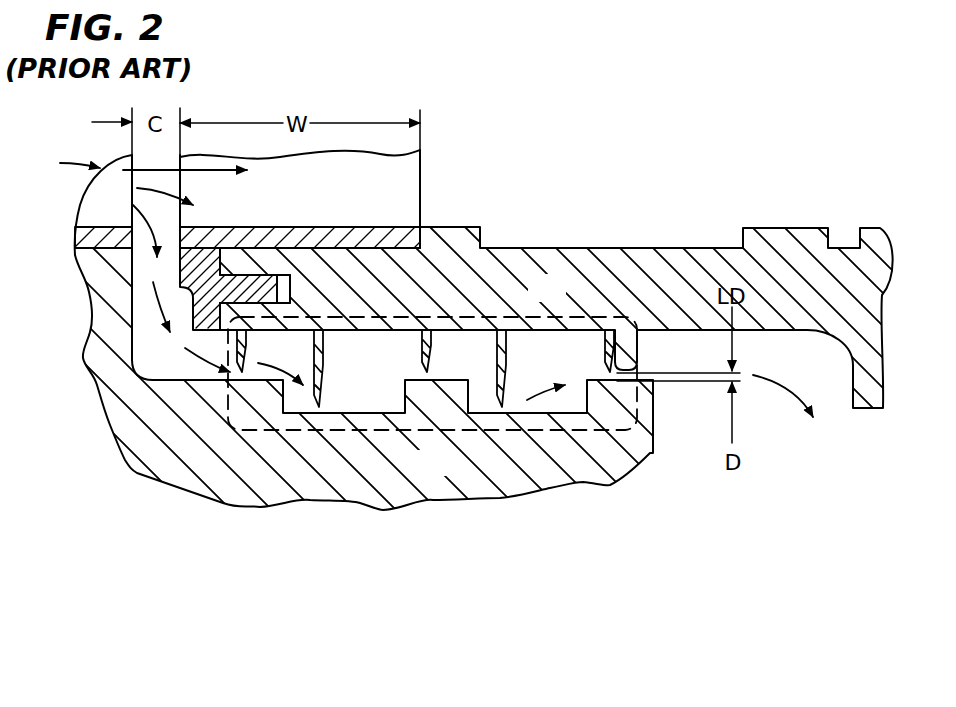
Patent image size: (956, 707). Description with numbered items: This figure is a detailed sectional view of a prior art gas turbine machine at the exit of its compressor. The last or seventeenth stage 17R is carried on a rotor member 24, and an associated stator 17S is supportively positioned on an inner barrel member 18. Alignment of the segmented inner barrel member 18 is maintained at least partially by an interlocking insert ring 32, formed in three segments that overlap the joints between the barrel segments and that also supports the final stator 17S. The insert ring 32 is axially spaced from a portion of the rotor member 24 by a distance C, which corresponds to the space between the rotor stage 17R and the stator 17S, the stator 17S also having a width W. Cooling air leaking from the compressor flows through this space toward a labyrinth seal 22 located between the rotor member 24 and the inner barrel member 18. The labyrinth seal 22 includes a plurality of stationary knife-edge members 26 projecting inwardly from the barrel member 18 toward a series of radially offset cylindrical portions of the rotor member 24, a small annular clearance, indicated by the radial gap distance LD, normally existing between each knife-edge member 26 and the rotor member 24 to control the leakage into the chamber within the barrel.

The seventeenth stage 17R is at (102, 191).
The stator 17S is at (276, 205).
The insert ring 32 is at (201, 248).
The inner barrel member 18 is at (532, 302).
The knife-edge members 26 is at (423, 346).
The labyrinth seal 22 is at (640, 343).
The rotor member 24 is at (420, 476).